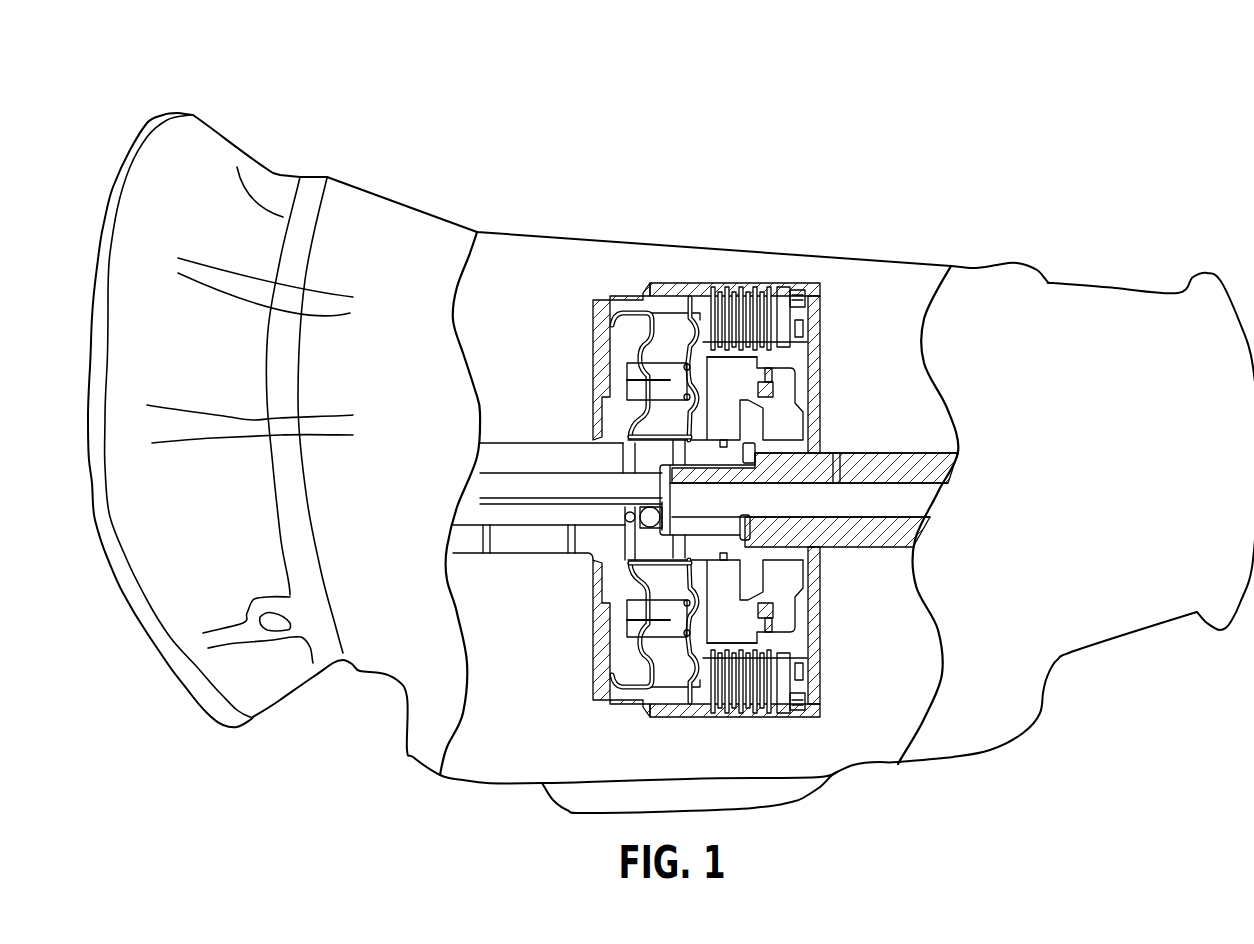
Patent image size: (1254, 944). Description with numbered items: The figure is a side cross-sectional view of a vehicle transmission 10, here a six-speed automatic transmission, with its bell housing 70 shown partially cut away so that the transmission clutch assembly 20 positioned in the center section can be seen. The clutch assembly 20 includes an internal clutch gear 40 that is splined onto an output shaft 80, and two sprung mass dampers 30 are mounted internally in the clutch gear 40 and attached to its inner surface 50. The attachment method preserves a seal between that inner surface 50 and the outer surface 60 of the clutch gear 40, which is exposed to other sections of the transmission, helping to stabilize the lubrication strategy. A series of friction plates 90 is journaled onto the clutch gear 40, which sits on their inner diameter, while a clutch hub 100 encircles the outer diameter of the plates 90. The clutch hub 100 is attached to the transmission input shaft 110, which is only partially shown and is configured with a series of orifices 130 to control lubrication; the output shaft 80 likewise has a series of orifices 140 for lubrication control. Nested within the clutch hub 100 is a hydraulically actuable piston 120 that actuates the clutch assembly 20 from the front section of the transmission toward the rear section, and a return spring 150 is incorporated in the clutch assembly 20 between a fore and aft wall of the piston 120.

The vehicle transmission 10 is at (390, 121).
The transmission clutch assembly 20 is at (521, 168).
The mass dampers 30 is at (772, 393).
The clutch gear 40 is at (780, 450).
The inner surface of the clutch gear 50 is at (759, 592).
The outer surface of the clutch gear 60 is at (814, 564).
The transmission bell housing 70 is at (195, 150).
The output shaft 80 is at (889, 474).
The friction plates 90 is at (763, 315).
The clutch hub 100 is at (717, 283).
The transmission input shaft 110 is at (490, 460).
The piston 120 is at (670, 305).
The orifices of the input shaft 130 is at (567, 570).
The orifices of the output shaft 140 is at (843, 467).
The return spring 150 is at (647, 367).